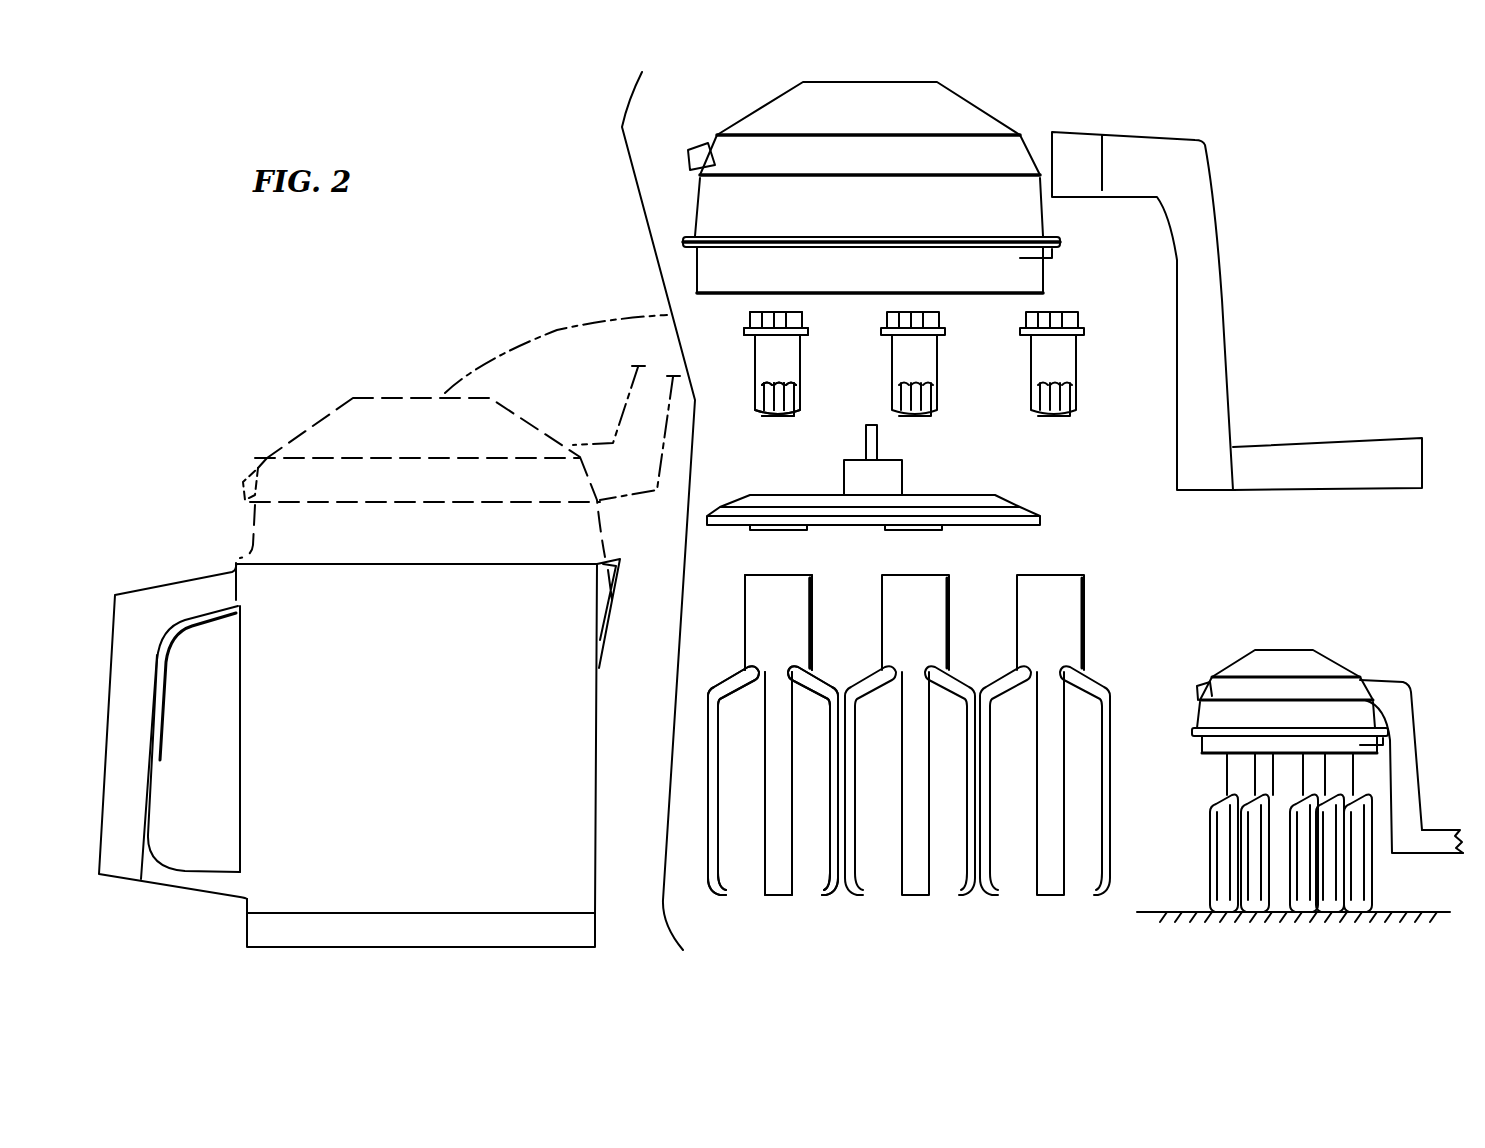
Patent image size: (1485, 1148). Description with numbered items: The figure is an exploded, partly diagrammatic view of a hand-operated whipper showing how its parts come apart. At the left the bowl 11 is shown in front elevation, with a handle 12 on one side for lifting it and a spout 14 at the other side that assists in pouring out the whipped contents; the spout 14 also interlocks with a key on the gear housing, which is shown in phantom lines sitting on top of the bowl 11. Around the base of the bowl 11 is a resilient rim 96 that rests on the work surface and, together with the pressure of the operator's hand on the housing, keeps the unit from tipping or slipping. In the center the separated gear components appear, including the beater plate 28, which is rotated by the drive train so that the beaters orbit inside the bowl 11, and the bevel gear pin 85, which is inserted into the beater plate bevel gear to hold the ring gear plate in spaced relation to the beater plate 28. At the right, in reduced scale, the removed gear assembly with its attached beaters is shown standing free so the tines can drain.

The bowl 11 is at (427, 773).
The handle 12 is at (161, 590).
The spout 14 is at (612, 600).
The beater plate 28 is at (1036, 514).
The bevel gear pin 85 is at (862, 440).
The rim 96 is at (247, 929).